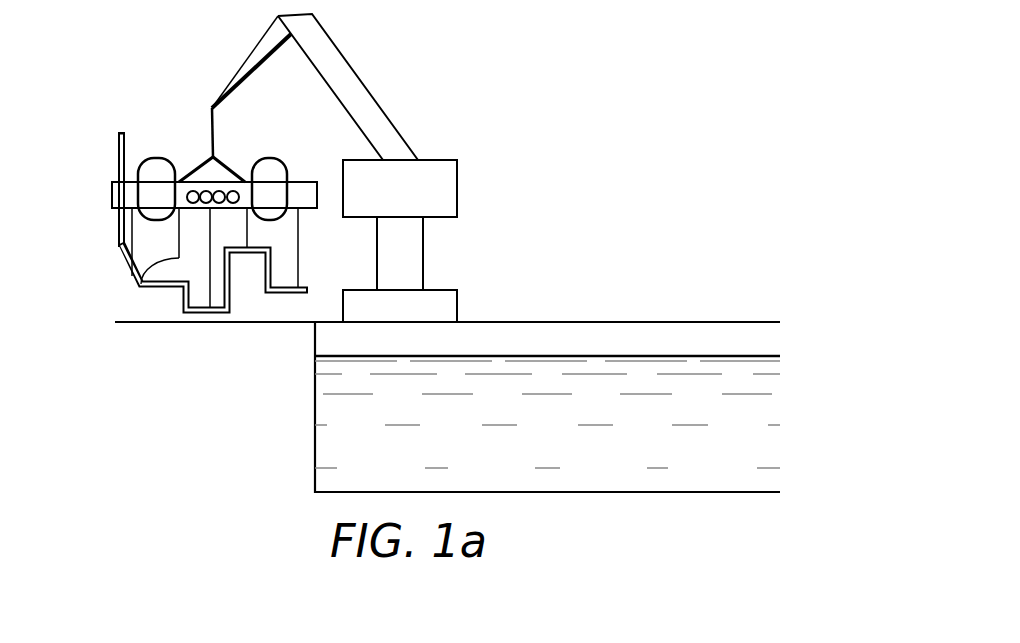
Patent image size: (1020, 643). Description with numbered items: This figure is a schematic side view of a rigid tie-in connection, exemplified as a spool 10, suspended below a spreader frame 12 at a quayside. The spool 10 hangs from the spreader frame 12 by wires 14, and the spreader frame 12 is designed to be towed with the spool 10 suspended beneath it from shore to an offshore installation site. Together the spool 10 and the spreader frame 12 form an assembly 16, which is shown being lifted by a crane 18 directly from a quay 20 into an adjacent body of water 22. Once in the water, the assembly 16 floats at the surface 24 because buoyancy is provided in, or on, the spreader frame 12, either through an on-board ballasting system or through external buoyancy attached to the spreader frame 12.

The spool 10 is at (118, 233).
The spreader frame 12 is at (112, 189).
The wires 14 is at (140, 284).
The assembly 16 is at (190, 142).
The crane 18 is at (458, 171).
The quay 20 is at (270, 323).
The body of water 22 is at (560, 443).
The surface 24 is at (697, 356).